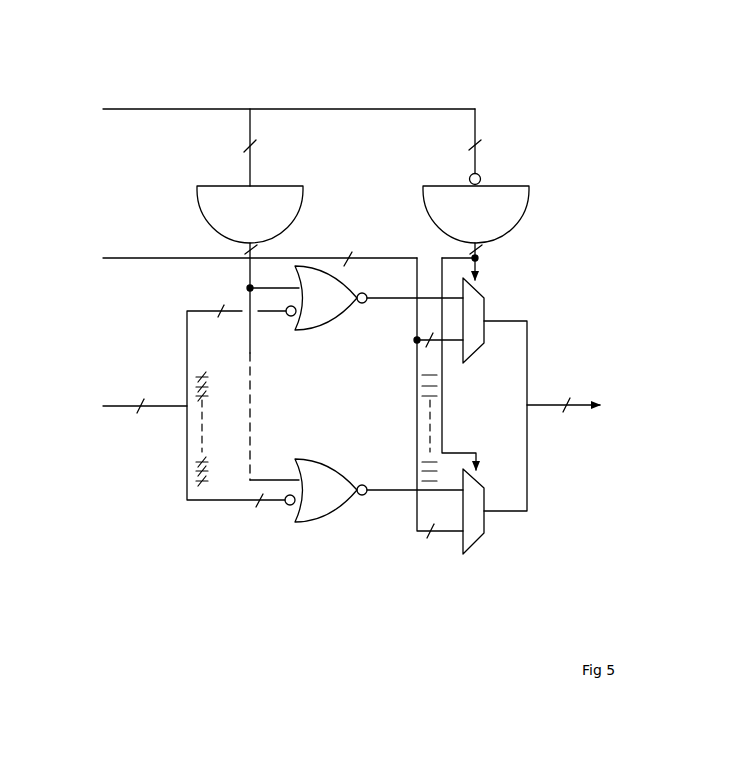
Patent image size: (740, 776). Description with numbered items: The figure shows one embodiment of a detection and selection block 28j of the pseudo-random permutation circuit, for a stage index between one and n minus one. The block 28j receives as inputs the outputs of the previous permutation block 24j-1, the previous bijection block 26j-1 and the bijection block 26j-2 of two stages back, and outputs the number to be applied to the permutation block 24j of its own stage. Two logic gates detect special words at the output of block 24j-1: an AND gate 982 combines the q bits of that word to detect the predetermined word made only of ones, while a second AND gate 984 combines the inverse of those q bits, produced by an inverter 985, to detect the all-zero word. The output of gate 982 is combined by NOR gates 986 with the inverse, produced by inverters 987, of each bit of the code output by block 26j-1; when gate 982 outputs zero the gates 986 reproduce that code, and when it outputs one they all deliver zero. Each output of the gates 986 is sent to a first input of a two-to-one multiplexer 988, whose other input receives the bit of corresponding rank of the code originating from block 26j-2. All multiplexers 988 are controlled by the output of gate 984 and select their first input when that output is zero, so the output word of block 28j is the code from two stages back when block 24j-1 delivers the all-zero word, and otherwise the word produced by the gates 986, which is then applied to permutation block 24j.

The detection and selection block 28j is at (473, 80).
The AND gate 982 is at (287, 202).
The AND gate 984 is at (513, 210).
The inverter 985 is at (481, 176).
The NOR gate 986 is at (330, 312).
The inverter 987 is at (290, 317).
The two-to-one multiplexer 988 is at (472, 311).
The permutation block of previous stage 24j-1 is at (267, 109).
The bijection block of second previous stage 26j-2 is at (238, 253).
The bijection block of previous stage 26j-1 is at (123, 398).
The permutation block 24j is at (577, 397).